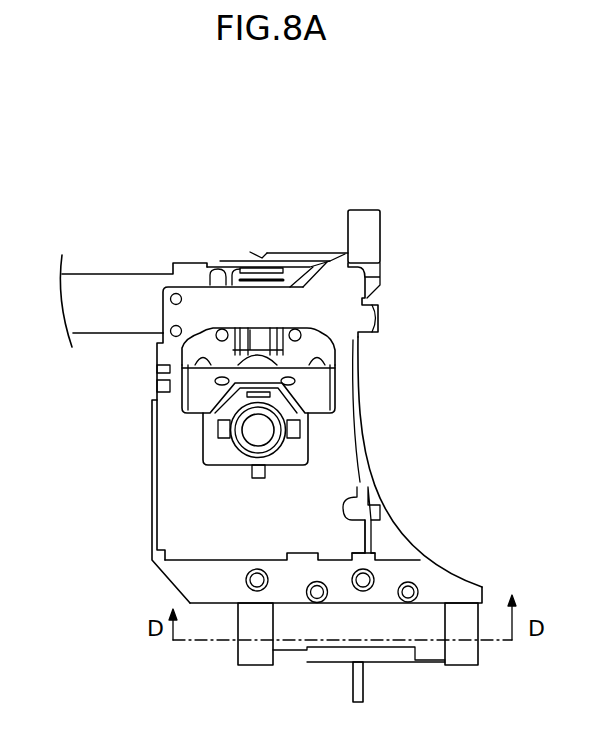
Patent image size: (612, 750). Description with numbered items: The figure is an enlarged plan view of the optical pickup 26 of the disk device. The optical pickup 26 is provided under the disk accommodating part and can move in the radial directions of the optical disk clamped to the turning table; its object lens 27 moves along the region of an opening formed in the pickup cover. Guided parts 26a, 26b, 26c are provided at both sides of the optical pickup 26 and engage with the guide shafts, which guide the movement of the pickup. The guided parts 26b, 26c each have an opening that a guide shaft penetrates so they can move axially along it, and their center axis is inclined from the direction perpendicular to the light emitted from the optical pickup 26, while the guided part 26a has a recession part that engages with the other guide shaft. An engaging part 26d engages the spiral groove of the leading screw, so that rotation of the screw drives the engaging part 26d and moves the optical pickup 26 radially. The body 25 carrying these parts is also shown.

The base plate 25 is at (335, 485).
The optical pickup 26 is at (340, 175).
The guided part 26a is at (375, 238).
The guided part 26b is at (257, 655).
The guided part 26c is at (468, 655).
The engaging part 26d is at (363, 685).
The object lens 27 is at (262, 432).